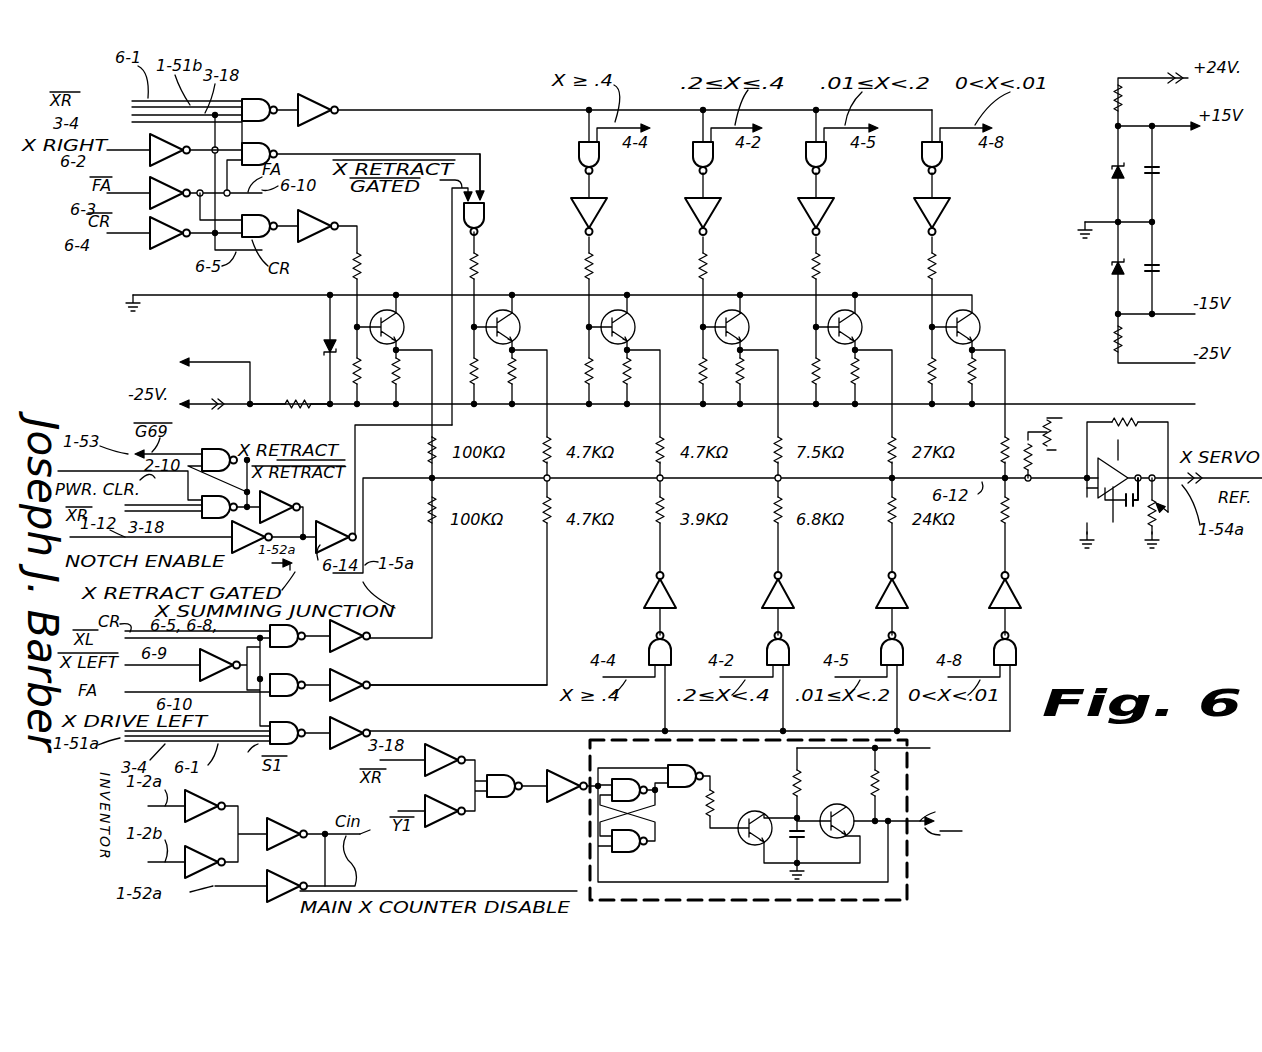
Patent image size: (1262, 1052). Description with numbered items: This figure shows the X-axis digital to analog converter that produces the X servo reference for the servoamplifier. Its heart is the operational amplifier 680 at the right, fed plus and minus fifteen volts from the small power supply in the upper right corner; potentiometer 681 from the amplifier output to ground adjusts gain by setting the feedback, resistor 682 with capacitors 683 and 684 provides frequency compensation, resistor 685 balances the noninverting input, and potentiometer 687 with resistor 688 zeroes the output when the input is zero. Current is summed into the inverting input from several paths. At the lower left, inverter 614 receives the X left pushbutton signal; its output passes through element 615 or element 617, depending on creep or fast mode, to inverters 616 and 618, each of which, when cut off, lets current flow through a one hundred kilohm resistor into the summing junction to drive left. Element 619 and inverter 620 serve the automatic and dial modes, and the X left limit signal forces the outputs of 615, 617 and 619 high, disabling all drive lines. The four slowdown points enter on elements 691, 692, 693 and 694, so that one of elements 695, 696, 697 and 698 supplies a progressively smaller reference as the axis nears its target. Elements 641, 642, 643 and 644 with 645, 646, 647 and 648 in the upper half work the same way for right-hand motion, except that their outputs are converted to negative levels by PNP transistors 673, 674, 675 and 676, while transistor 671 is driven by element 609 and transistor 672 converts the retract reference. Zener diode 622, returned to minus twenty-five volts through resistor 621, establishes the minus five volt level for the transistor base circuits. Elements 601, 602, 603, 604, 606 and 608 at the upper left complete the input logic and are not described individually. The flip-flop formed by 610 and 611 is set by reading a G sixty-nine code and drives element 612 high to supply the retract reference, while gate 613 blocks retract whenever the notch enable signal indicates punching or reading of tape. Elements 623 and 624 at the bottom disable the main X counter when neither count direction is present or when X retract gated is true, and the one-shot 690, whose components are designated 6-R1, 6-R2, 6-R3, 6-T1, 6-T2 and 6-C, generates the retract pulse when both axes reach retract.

The NAND gate 601 is at (258, 97).
The inverter 602 is at (320, 96).
The inverter 603 is at (167, 148).
The NAND gate 604 is at (255, 145).
The inverter 606 is at (167, 191).
The NAND gate 608 is at (258, 238).
The element 609 is at (322, 220).
The flip-flop element 610 is at (218, 448).
The flip-flop element 611 is at (203, 517).
The element 612 is at (283, 503).
The gate 613 is at (250, 555).
The inverter 614 is at (200, 672).
The element 615 is at (275, 632).
The inverter 616 is at (352, 636).
The element 617 is at (283, 676).
The inverter 618 is at (355, 676).
The element 619 is at (283, 724).
The inverter 620 is at (355, 724).
The resistor 621 is at (203, 796).
The zener diode 622 is at (210, 870).
The element 623 is at (285, 824).
The element 624 is at (260, 890).
The element 641 is at (578, 150).
The element 642 is at (690, 168).
The element 643 is at (804, 168).
The element 644 is at (920, 166).
The element 645 is at (572, 215).
The element 646 is at (686, 215).
The element 647 is at (800, 215).
The element 648 is at (918, 218).
The transistor 671 is at (380, 310).
The transistor 672 is at (518, 324).
The transistor 673 is at (635, 324).
The transistor 674 is at (748, 324).
The transistor 675 is at (862, 324).
The transistor 676 is at (975, 320).
The operational amplifier 680 is at (1130, 470).
The potentiometer 681 is at (1162, 522).
The resistor 682 is at (1130, 458).
The capacitor 683 is at (1140, 430).
The capacitor 684 is at (1135, 510).
The balancing resistor 685 is at (1050, 500).
The potentiometer 687 is at (1096, 405).
The resistor 688 is at (1036, 458).
The one-shot 690 is at (784, 820).
The element 691 is at (672, 644).
The element 692 is at (790, 644).
The element 693 is at (904, 644).
The element 694 is at (1017, 644).
The element 695 is at (670, 592).
The element 696 is at (788, 592).
The element 697 is at (902, 592).
The element 698 is at (1015, 590).
The resistor 6-R1 is at (716, 798).
The resistor 6-R2 is at (805, 778).
The resistor 6-R3 is at (880, 792).
The transistor 6-T1 is at (768, 800).
The transistor 6-T2 is at (852, 812).
The capacitor 6-C is at (803, 838).